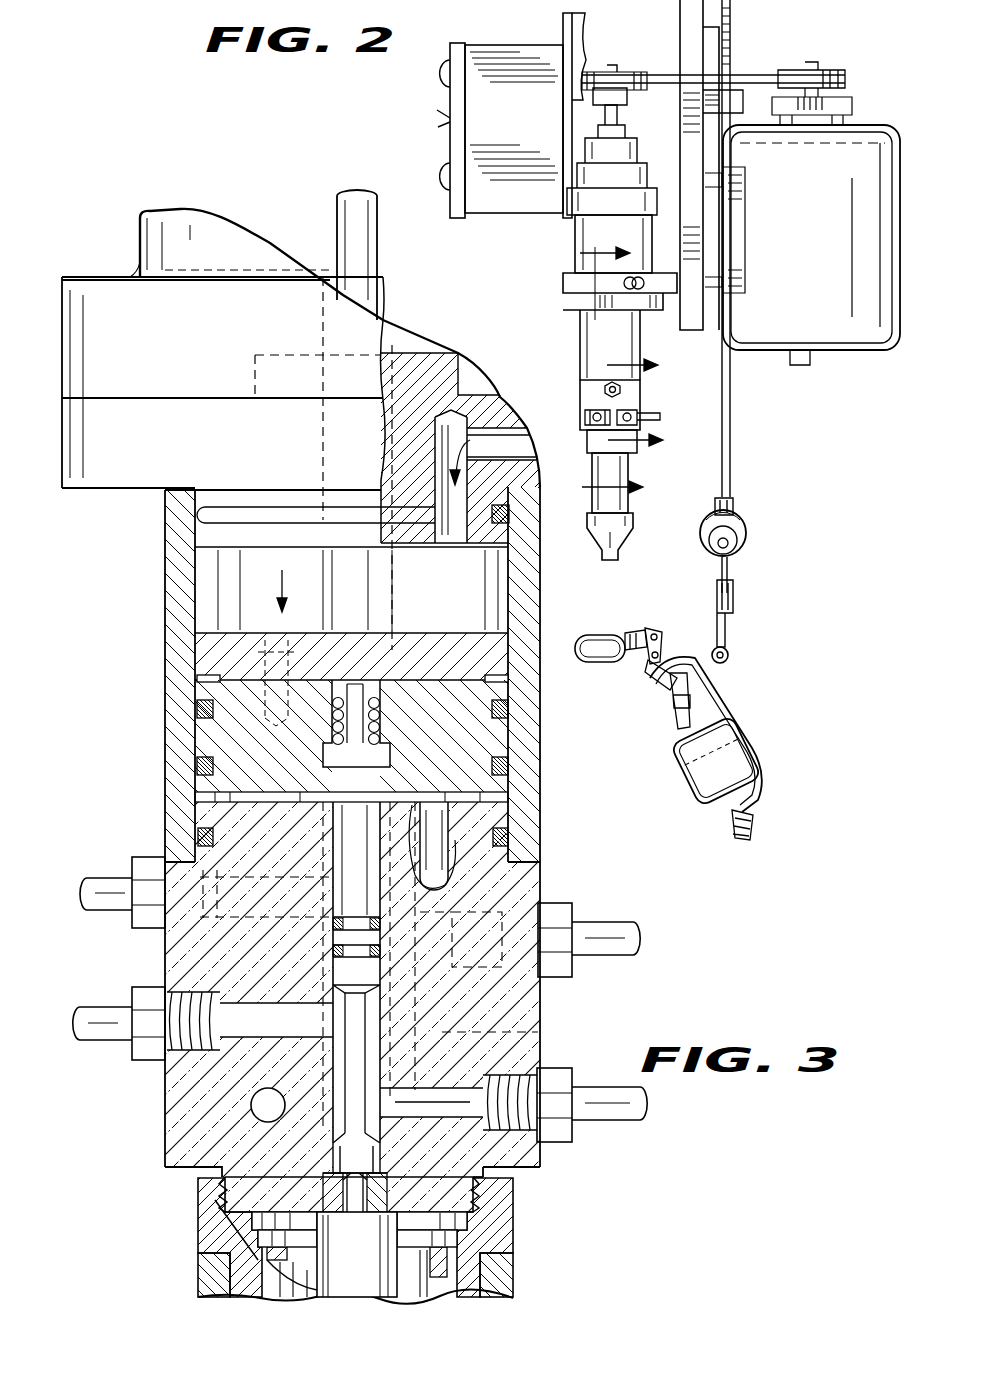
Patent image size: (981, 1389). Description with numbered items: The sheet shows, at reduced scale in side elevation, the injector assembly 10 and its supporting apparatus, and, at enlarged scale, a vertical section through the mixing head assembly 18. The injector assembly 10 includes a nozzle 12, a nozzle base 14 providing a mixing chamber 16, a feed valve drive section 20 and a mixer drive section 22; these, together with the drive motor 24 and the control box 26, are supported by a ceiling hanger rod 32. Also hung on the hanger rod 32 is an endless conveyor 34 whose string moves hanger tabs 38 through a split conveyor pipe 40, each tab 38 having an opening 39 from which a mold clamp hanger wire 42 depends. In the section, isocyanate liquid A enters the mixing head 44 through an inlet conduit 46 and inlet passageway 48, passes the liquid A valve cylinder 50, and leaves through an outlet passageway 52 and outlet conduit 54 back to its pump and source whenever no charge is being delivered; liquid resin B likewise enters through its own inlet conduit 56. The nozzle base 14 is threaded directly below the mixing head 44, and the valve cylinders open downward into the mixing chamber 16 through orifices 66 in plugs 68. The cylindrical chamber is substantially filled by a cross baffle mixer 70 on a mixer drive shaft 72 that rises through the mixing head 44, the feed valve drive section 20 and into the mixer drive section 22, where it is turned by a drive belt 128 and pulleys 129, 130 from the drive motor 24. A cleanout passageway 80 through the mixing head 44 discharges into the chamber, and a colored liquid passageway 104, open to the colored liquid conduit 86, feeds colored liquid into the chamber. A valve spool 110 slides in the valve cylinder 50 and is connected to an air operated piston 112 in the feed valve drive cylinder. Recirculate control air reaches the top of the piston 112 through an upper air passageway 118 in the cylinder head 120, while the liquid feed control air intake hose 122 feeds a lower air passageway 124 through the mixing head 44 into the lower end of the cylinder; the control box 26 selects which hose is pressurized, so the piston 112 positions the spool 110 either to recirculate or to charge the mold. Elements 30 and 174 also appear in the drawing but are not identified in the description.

In FIG. 2, the injector assembly 10 is at (570, 314).
In FIG. 2, the nozzle 12 is at (625, 526).
In FIG. 3, the nozzle base 14 is at (205, 1238).
In FIG. 2, the nozzle base 14 is at (590, 526).
In FIG. 3, the mixing chamber 16 is at (215, 1280).
In FIG. 3, the mixing head assembly 18 is at (524, 1010).
In FIG. 2, the mixing head assembly 18 is at (582, 386).
In FIG. 3, the feed valve drive section 20 is at (160, 638).
In FIG. 2, the feed valve drive section 20 is at (625, 350).
In FIG. 2, the mixer drive section 22 is at (578, 233).
In FIG. 2, the drive motor 24 is at (885, 128).
In FIG. 2, the control box 26 is at (512, 72).
In FIG. 2, the mounting plate 30 is at (575, 25).
In FIG. 2, the ceiling hanger rod 32 is at (712, 40).
In FIG. 2, the endless conveyor 34 is at (732, 510).
In FIG. 2, the hanger tab 38 is at (730, 570).
In FIG. 2, the opening 39 is at (717, 596).
In FIG. 2, the split conveyor pipe 40 is at (745, 538).
In FIG. 2, the mold clamp hanger wire 42 is at (727, 633).
In FIG. 3, the mixing head 44 is at (535, 1000).
In FIG. 2, the mixing head 44 is at (590, 380).
In FIG. 3, the inlet conduit 46 is at (628, 1112).
In FIG. 2, the inlet conduit 46 is at (598, 414).
In FIG. 3, the inlet passageway 48 is at (500, 1177).
In FIG. 3, the liquid A valve cylinder 50 is at (346, 1078).
In FIG. 3, the outlet passageway 52 is at (312, 1020).
In FIG. 3, the outlet conduit 54 is at (110, 1010).
In FIG. 2, the inlet conduit 56 is at (644, 414).
In FIG. 3, the orifice 66 is at (480, 1197).
In FIG. 3, the plug 68 is at (318, 1196).
In FIG. 3, the cross baffle mixer 70 is at (450, 1237).
In FIG. 3, the mixer drive shaft 72 is at (348, 210).
In FIG. 2, the mixer drive shaft 72 is at (619, 120).
In FIG. 3, the cleanout passageway 80 is at (262, 1102).
In FIG. 3, the colored liquid conduit 86 is at (600, 925).
In FIG. 3, the colored liquid passageway 104 is at (538, 1033).
In FIG. 3, the valve spool 110 is at (345, 964).
In FIG. 3, the air operated piston 112 is at (235, 745).
In FIG. 3, the upper air passageway 118 is at (458, 540).
In FIG. 3, the cylinder head 120 is at (400, 424).
In FIG. 3, the liquid feed control air intake hose 122 is at (118, 876).
In FIG. 3, the lower air passageway 124 is at (440, 858).
In FIG. 2, the drive belt 128 is at (757, 75).
In FIG. 2, the pulley 129 is at (840, 70).
In FIG. 2, the pulley 130 is at (640, 52).
In FIG. 3, the piston plate 174 is at (190, 690).